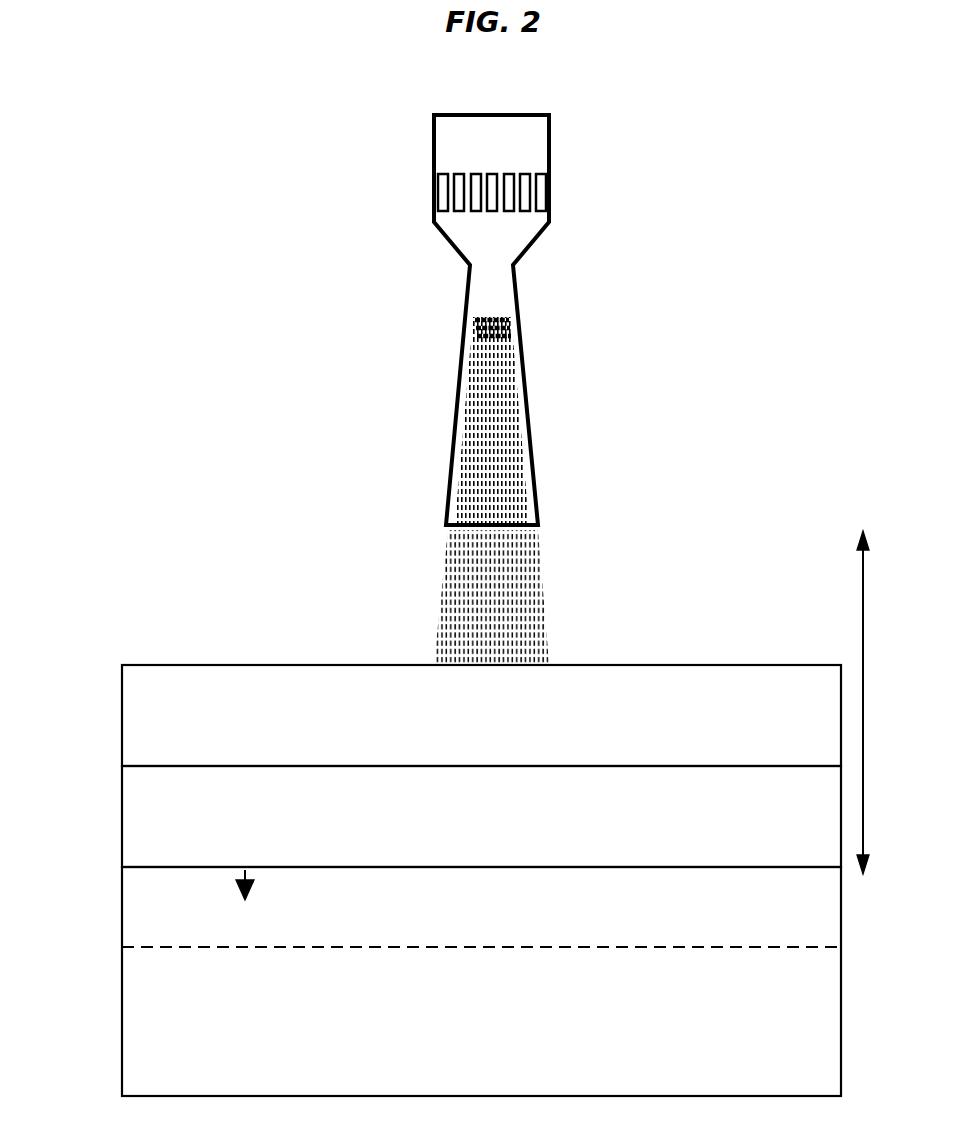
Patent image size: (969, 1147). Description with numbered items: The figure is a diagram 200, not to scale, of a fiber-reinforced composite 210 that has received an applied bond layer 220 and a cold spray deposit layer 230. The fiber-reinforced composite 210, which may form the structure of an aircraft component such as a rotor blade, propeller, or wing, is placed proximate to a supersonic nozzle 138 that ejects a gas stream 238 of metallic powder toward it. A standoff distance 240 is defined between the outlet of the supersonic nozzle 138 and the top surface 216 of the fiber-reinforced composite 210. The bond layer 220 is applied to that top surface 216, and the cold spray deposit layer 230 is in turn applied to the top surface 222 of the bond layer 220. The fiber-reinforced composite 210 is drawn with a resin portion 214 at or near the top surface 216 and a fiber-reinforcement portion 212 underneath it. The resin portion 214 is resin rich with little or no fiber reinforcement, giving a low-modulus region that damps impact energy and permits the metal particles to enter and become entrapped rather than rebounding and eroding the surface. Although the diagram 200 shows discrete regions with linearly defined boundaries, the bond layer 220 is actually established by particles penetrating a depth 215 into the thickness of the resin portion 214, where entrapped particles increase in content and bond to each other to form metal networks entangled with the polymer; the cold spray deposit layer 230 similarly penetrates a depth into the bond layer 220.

The diagram 200 is at (886, 234).
The supersonic nozzle 138 is at (528, 405).
The gas stream 238 is at (556, 606).
The standoff distance 240 is at (862, 587).
The cold spray deposit layer 230 is at (481, 715).
The bond layer 220 is at (481, 816).
The fiber-reinforced composite 210 is at (481, 981).
The top surface of the bond layer 222 is at (110, 766).
The top surface of the FRC 216 is at (110, 867).
The depth 215 is at (245, 870).
The resin portion 214 is at (93, 867).
The fiber-reinforcement portion 212 is at (107, 948).